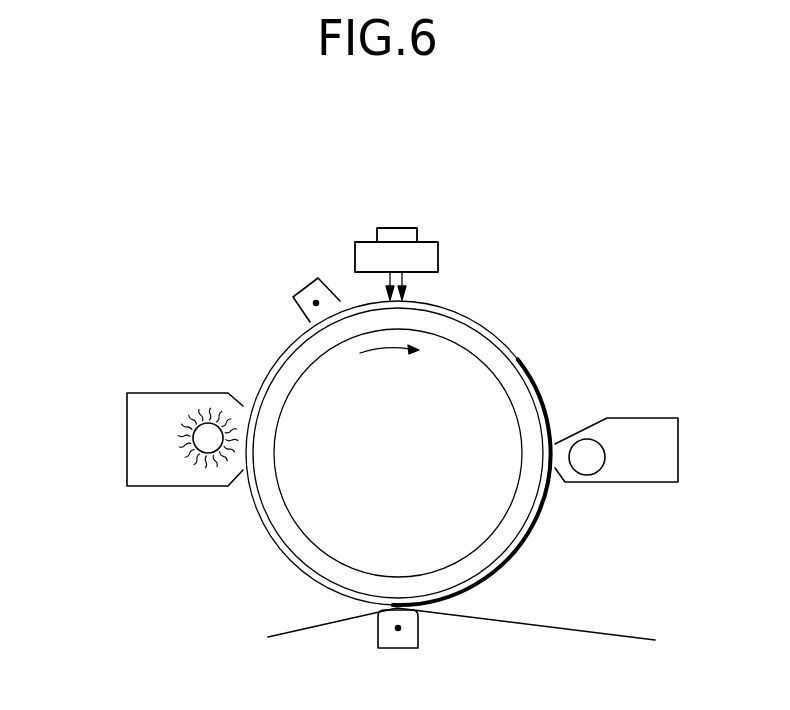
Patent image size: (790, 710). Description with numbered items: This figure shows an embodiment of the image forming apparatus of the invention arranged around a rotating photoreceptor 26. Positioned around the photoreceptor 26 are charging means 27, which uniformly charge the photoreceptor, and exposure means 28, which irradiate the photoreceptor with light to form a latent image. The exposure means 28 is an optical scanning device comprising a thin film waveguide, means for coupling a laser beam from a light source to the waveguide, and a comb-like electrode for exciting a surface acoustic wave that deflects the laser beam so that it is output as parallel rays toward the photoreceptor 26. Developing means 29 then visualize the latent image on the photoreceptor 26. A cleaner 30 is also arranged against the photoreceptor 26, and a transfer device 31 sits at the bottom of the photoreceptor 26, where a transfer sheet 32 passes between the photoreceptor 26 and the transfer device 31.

The photoreceptor 26 is at (521, 357).
The charging means 27 is at (306, 284).
The exposure means 28 is at (438, 253).
The developing means 29 is at (642, 418).
The cleaner 30 is at (127, 440).
The transfer device 31 is at (378, 632).
The transfer sheet 32 is at (583, 633).